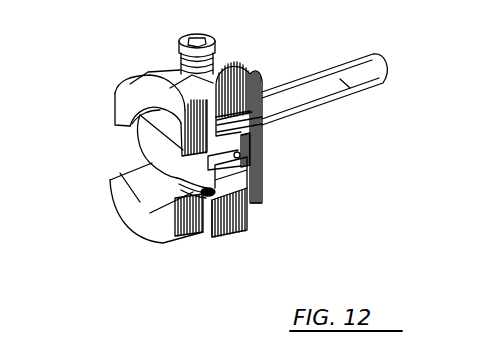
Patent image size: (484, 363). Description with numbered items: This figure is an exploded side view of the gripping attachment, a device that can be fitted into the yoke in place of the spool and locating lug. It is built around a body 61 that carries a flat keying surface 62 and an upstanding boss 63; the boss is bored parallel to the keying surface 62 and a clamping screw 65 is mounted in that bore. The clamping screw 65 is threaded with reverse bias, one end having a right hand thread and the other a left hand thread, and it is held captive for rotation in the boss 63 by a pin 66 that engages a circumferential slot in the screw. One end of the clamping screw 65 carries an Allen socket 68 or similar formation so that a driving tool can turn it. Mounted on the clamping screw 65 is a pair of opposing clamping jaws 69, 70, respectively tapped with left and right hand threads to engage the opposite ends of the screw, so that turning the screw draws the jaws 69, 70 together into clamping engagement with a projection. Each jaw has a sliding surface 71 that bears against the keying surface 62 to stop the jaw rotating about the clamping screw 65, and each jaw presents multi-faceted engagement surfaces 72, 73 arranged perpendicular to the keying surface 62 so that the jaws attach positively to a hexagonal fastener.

The body 61 is at (345, 84).
The keying surface 62 is at (245, 178).
The upstanding boss 63 is at (143, 140).
The clamping screw 65 is at (222, 66).
The pin 66 is at (265, 158).
The Allen socket 68 is at (215, 38).
The clamping jaw 69 is at (128, 104).
The clamping jaw 70 is at (163, 240).
The sliding surface 71 is at (250, 215).
The multi-faceted engagement surface 72 is at (133, 127).
The multi-faceted engagement surface 73 is at (137, 190).